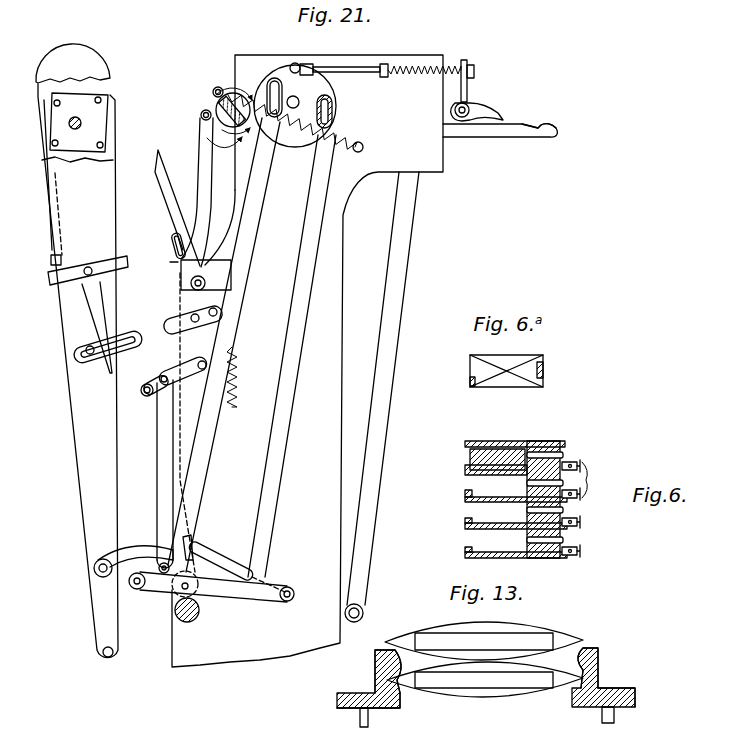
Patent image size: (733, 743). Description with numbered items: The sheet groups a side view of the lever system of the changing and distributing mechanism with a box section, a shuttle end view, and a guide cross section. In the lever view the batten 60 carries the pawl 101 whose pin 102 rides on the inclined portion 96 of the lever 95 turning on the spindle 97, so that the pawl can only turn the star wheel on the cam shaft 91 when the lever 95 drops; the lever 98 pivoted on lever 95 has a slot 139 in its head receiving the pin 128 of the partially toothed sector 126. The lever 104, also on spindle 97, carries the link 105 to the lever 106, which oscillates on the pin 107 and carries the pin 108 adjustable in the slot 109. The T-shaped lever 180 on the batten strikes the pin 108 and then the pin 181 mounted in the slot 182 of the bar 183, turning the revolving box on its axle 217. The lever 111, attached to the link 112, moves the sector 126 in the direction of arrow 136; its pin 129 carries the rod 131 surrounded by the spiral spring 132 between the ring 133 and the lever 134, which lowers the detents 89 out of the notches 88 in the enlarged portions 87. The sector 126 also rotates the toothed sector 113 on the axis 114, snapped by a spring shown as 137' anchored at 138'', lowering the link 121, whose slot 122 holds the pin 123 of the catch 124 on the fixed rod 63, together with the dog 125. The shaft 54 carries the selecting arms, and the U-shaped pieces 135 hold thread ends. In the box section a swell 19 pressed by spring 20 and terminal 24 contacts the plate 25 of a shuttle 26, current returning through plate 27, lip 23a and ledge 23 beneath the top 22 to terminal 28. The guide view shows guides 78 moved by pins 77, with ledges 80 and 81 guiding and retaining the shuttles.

In FIG. 21, the shaft 54 is at (362, 612).
In FIG. 21, the lever 98 is at (300, 283).
In FIG. 21, the link 112 is at (250, 238).
In FIG. 21, the partially toothed sector 126 is at (263, 75).
In FIG. 21, the pivot pin 128 is at (333, 106).
In FIG. 21, the pivot pin 129 is at (300, 64).
In FIG. 21, the rod 131 is at (364, 73).
In FIG. 21, the ring 133 is at (388, 77).
In FIG. 21, the spiral spring 132 is at (406, 66).
In FIG. 21, the lever 134 is at (467, 62).
In FIG. 21, the detent 89 is at (482, 107).
In FIG. 21, the enlarged portion 87 is at (490, 131).
In FIG. 21, the notch 88 is at (545, 124).
In FIG. 21, the U-shaped piece 135 is at (228, 92).
In FIG. 21, the arrow 136 is at (300, 155).
In FIG. 21, the toothed sector 113 is at (228, 118).
In FIG. 21, the axis 114 is at (213, 100).
In FIG. 21, the dog 125 is at (202, 114).
In FIG. 21, the slot 139 is at (221, 140).
In FIG. 21, the link 121 is at (200, 170).
In FIG. 21, the catch 124 is at (166, 198).
In FIG. 21, the slot 122 is at (173, 240).
In FIG. 21, the pin 123 is at (173, 262).
In FIG. 21, the bar 183 is at (105, 97).
In FIG. 21, the axle 217 is at (82, 124).
In FIG. 21, the batten 60 is at (87, 460).
In FIG. 21, the T-shaped lever 180 is at (96, 314).
In FIG. 21, the pin 181 is at (76, 352).
In FIG. 21, the slot 182 is at (126, 338).
In FIG. 21, the fixed rod 63 is at (178, 318).
In FIG. 21, the pin 107 is at (203, 361).
In FIG. 21, the slot 109 is at (166, 375).
In FIG. 21, the lever 106 is at (152, 384).
In FIG. 21, the pin 108 is at (146, 396).
In FIG. 21, the link 105 is at (162, 471).
In FIG. 21, the lever 104 is at (214, 576).
In FIG. 21, the spring 137' is at (249, 377).
In FIG. 21, the spring 138'' is at (252, 396).
In FIG. 21, the pawl 101 is at (117, 551).
In FIG. 21, the pin 102 is at (188, 558).
In FIG. 21, the inclined portion 96 is at (190, 535).
In FIG. 21, the lever 95 is at (226, 560).
In FIG. 21, the spindle 97 is at (288, 587).
In FIG. 21, the lever 111 is at (247, 597).
In FIG. 21, the cam shaft 91 is at (185, 622).
In FIG. 6a, the shuttle 26 is at (511, 356).
In FIG. 6, the shuttle 26 is at (500, 448).
In FIG. 6a, the contact plate 27 is at (470, 380).
In FIG. 6, the contact plate 27 is at (466, 470).
In FIG. 6a, the contact plate 25 is at (543, 370).
In FIG. 6, the metallic piece 22 is at (504, 440).
In FIG. 6, the lip 23a is at (465, 497).
In FIG. 6, the ledge 23 is at (474, 504).
In FIG. 6, the terminal 24 is at (564, 456).
In FIG. 6, the swell 19 is at (527, 482).
In FIG. 6, the spring 20 is at (565, 511).
In FIG. 6, the terminal 28 is at (593, 556).
In FIG. 13, the ledge 80 is at (375, 658).
In FIG. 13, the guide 78 is at (344, 698).
In FIG. 13, the pin 77 is at (497, 718).
In FIG. 13, the ledge 81 is at (402, 698).